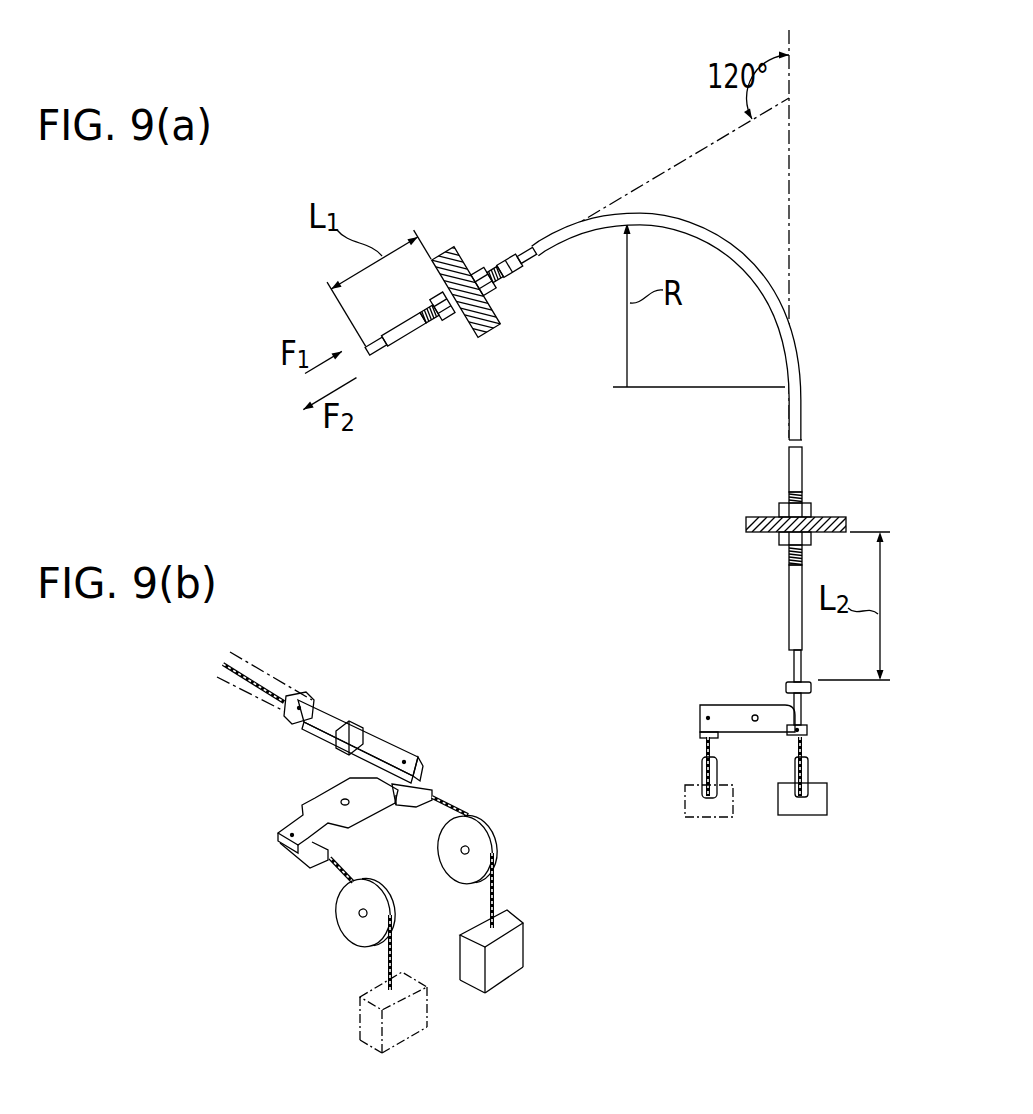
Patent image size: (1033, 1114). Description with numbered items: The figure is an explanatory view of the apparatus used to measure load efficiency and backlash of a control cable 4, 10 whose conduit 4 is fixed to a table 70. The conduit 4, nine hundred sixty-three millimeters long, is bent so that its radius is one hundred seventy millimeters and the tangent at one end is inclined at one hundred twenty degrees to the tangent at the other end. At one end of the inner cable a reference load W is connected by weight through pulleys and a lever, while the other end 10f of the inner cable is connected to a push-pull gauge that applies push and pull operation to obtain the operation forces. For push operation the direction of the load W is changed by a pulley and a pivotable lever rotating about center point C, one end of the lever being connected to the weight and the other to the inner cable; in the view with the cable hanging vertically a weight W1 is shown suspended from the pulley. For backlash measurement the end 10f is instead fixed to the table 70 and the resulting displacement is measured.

The conduit 4 is at (512, 250).
The inner cable 10 is at (538, 242).
The other end of the inner cable 10f is at (383, 350).
The table 70 is at (472, 334).
The reference load W is at (514, 945).
The weight W1 is at (805, 816).
The center point C is at (292, 833).